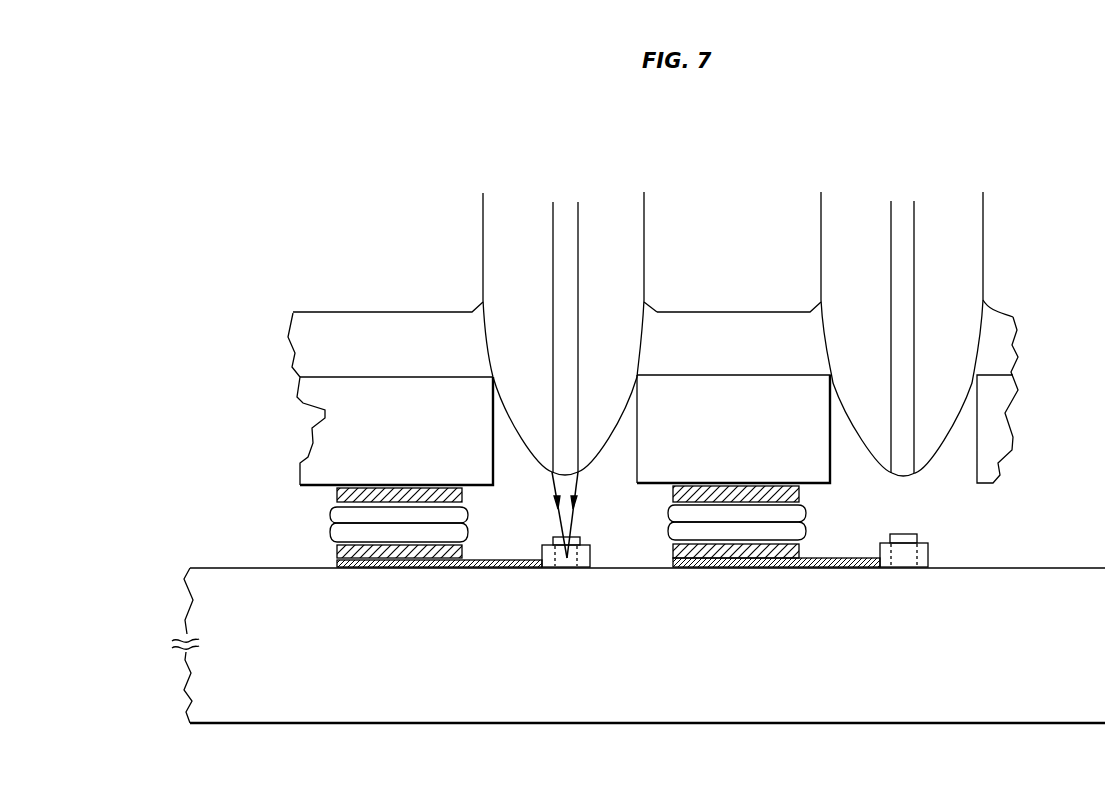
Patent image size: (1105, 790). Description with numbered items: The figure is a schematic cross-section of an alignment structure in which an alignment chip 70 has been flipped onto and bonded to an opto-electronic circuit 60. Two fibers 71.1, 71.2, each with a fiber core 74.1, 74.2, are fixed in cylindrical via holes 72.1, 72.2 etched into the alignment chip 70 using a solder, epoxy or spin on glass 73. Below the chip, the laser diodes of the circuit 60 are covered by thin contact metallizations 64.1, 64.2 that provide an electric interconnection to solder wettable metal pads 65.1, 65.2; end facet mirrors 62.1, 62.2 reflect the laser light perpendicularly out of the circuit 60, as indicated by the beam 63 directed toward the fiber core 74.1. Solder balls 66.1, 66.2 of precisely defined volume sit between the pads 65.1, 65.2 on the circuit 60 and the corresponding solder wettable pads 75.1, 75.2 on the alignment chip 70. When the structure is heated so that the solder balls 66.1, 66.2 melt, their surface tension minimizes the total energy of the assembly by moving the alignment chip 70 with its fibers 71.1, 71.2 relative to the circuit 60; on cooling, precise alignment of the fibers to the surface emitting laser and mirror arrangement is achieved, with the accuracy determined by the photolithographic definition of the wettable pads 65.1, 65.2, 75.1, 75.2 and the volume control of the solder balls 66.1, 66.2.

The opto-electronic circuit 60 is at (253, 701).
The end facet mirror 62.1 is at (590, 555).
The end facet mirror 62.2 is at (930, 552).
The beam 63 is at (562, 515).
The contact metallization 64.1 is at (490, 568).
The contact metallization 64.2 is at (818, 567).
The solder wettable metal pad 65.1 is at (337, 558).
The solder wettable metal pad 65.2 is at (732, 567).
The solder ball 66.1 is at (342, 522).
The solder ball 66.2 is at (793, 522).
The alignment chip 70 is at (378, 419).
The fiber 71.1 is at (510, 232).
The fiber 71.2 is at (852, 238).
The cylindrical via hole 72.1 is at (518, 465).
The cylindrical via hole 72.2 is at (963, 433).
The solder, epoxy or spin on glass 73 is at (323, 340).
The fiber core 74.1 is at (563, 215).
The fiber core 74.2 is at (904, 208).
The solder wettable pad 75.1 is at (337, 498).
The solder wettable pad 75.2 is at (799, 493).